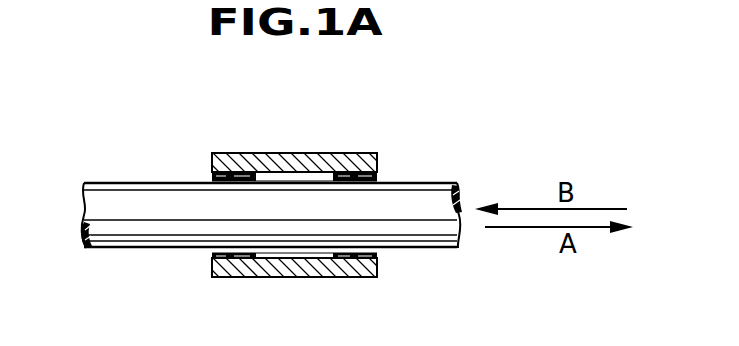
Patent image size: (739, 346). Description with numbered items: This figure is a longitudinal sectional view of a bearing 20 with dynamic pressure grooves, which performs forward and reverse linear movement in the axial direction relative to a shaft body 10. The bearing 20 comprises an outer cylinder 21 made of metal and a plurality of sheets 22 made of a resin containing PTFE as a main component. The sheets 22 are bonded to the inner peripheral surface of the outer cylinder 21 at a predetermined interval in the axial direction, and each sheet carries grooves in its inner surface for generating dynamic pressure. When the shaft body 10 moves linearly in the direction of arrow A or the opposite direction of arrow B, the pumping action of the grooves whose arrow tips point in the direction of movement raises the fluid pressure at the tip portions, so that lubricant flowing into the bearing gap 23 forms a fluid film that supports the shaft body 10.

The shaft body 10 is at (450, 184).
The bearing with dynamic pressure grooves 20 is at (312, 205).
The outer cylinder 21 is at (338, 128).
The sheets 22 is at (229, 188).
The bearing gap 23 is at (226, 270).